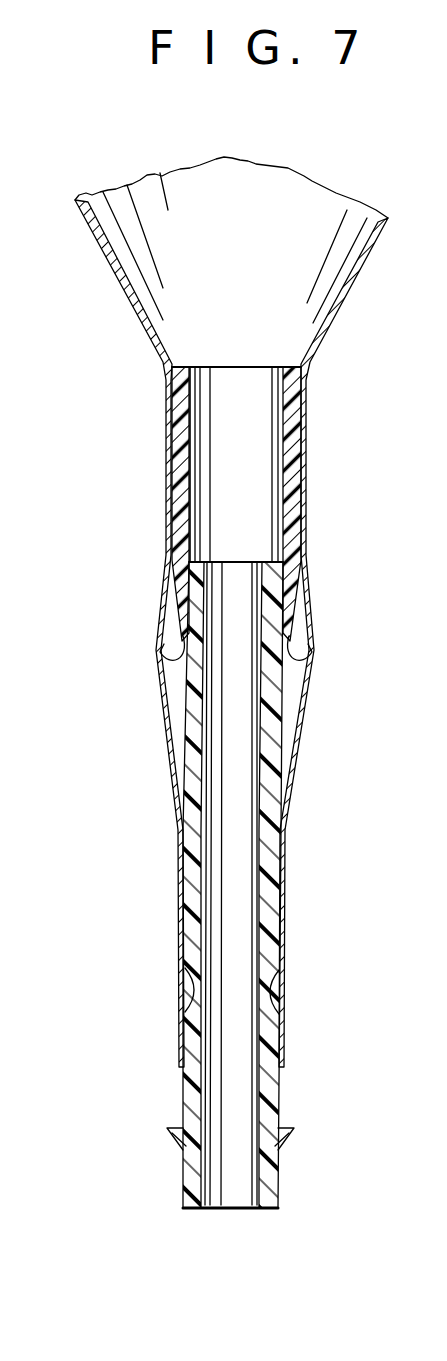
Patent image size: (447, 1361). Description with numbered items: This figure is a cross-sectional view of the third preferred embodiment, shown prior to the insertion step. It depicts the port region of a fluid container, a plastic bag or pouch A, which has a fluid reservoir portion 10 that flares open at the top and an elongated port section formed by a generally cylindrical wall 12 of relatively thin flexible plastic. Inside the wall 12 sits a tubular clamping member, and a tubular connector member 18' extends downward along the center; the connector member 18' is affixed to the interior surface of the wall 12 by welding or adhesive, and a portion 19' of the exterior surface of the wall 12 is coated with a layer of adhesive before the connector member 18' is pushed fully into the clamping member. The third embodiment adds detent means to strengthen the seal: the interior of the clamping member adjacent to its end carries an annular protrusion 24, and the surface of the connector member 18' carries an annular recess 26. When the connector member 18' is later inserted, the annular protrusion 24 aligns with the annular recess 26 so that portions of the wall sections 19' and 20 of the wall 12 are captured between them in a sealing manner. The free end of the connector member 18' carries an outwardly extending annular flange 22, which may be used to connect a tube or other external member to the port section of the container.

The fluid reservoir portion 10 is at (150, 270).
The pouch A is at (366, 274).
The port section wall 12 is at (167, 473).
The wall section 20 is at (303, 755).
The annular protrusion 24 is at (183, 647).
The connector member 18' is at (267, 885).
The wall portion 19' is at (180, 883).
The annular recess 26 is at (190, 987).
The flange 22 is at (294, 1128).